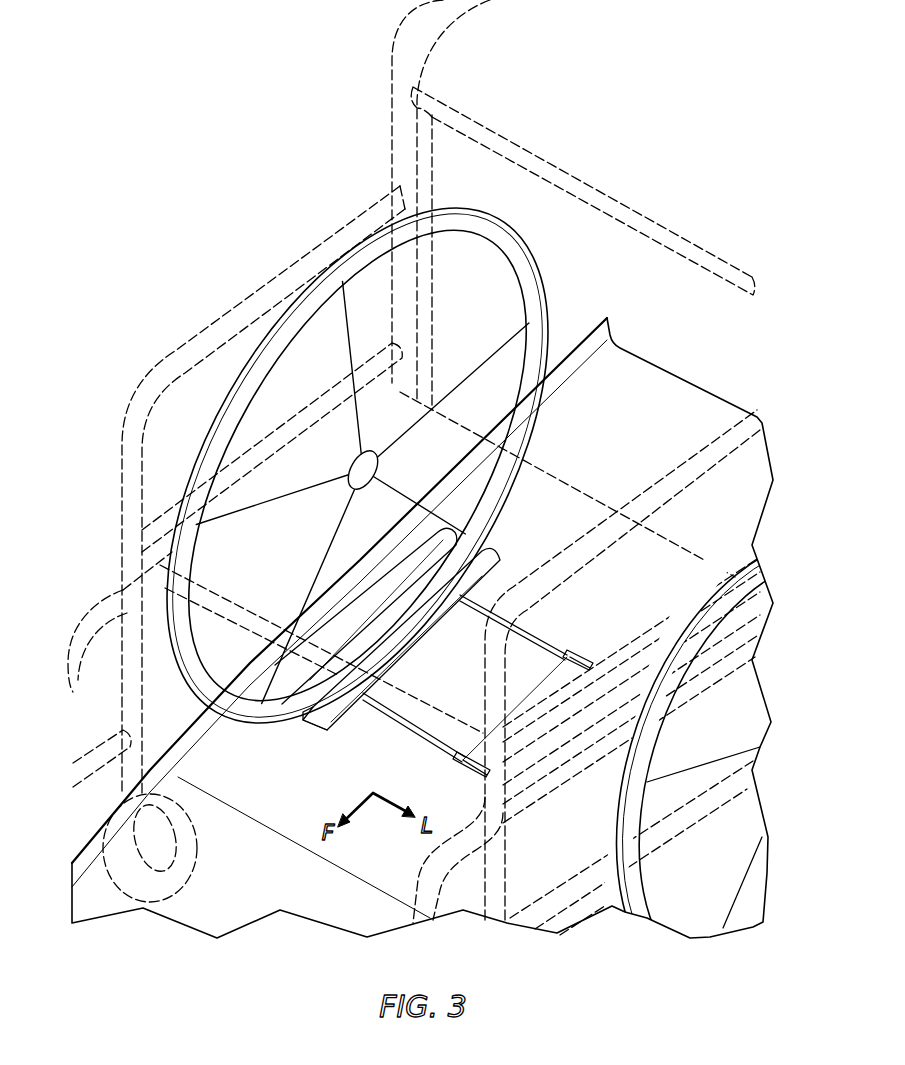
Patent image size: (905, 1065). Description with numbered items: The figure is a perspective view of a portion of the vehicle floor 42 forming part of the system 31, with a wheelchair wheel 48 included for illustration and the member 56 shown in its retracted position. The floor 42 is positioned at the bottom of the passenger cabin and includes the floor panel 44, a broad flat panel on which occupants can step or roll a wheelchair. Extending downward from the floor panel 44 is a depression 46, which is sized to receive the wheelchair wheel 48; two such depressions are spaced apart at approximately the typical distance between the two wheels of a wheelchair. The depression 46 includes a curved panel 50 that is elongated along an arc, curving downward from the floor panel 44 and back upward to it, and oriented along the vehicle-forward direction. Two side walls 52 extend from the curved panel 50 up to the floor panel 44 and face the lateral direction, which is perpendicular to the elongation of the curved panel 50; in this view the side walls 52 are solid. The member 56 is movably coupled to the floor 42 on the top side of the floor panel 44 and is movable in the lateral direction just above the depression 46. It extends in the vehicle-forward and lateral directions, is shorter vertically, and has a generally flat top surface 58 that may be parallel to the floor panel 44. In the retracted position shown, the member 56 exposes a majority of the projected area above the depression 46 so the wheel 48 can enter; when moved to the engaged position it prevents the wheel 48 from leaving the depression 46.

The system 31 is at (526, 540).
The floor 42 is at (92, 840).
The floor panel 44 is at (290, 840).
The depression 46 is at (332, 733).
The wheelchair wheel 48 is at (545, 290).
The curved panel 50 is at (304, 722).
The side wall 52 is at (397, 573).
The member 56 is at (420, 733).
The top surface 58 is at (537, 630).